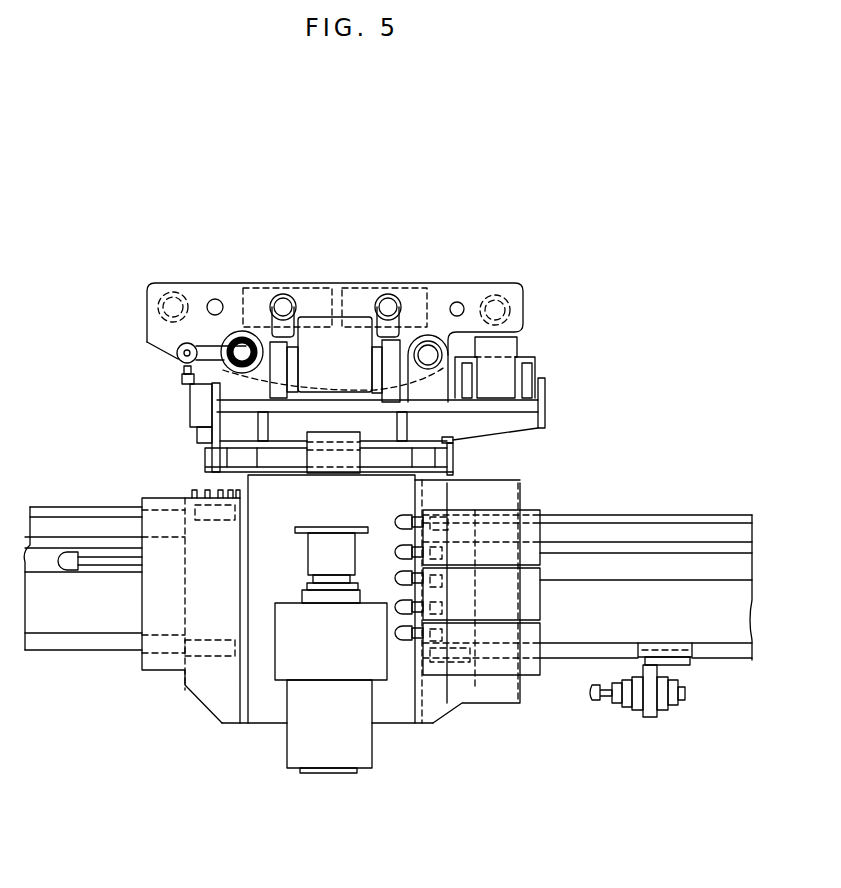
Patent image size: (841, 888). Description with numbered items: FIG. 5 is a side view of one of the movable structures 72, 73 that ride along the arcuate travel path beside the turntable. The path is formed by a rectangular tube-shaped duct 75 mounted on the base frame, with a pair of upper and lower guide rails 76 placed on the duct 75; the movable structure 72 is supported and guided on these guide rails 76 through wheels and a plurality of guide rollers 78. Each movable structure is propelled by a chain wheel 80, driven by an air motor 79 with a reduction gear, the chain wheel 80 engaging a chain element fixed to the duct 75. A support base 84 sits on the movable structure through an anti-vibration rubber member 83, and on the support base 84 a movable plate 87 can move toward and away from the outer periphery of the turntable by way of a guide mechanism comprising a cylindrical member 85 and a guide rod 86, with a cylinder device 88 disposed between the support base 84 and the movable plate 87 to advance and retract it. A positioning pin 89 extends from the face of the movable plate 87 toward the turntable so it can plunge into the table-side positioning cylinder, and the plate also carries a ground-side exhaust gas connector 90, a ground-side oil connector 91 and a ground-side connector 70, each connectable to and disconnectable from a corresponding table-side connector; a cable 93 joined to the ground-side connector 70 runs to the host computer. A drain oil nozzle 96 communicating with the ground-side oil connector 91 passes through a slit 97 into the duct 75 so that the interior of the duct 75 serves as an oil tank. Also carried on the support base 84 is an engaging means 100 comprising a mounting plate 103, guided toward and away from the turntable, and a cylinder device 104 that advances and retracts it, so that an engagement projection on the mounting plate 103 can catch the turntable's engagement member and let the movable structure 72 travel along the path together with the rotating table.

The ground-side connector 70 is at (343, 287).
The movable structure 72 is at (255, 720).
The movable structure 73 is at (313, 640).
The duct 75 is at (748, 627).
The guide rails 76 is at (63, 523).
The guide rollers 78 is at (483, 505).
The air motor 79 is at (338, 758).
The chain wheel 80 is at (327, 525).
The anti-vibration rubber member 83 is at (437, 460).
The support base 84 is at (525, 427).
The cylindrical member 85 is at (437, 340).
The guide rod 86 is at (425, 345).
The movable plate 87 is at (190, 283).
The cylinder device 88 is at (308, 325).
The positioning pin 89 is at (158, 305).
The ground-side exhaust gas connector 90 is at (215, 298).
The ground-side oil connector 91 is at (462, 303).
The cable 93 is at (283, 300).
The drain oil nozzle 96 is at (105, 558).
The slit 97 is at (25, 563).
The engaging means 100 is at (545, 366).
The mounting plate 103 is at (522, 357).
The cylinder device 104 is at (500, 385).